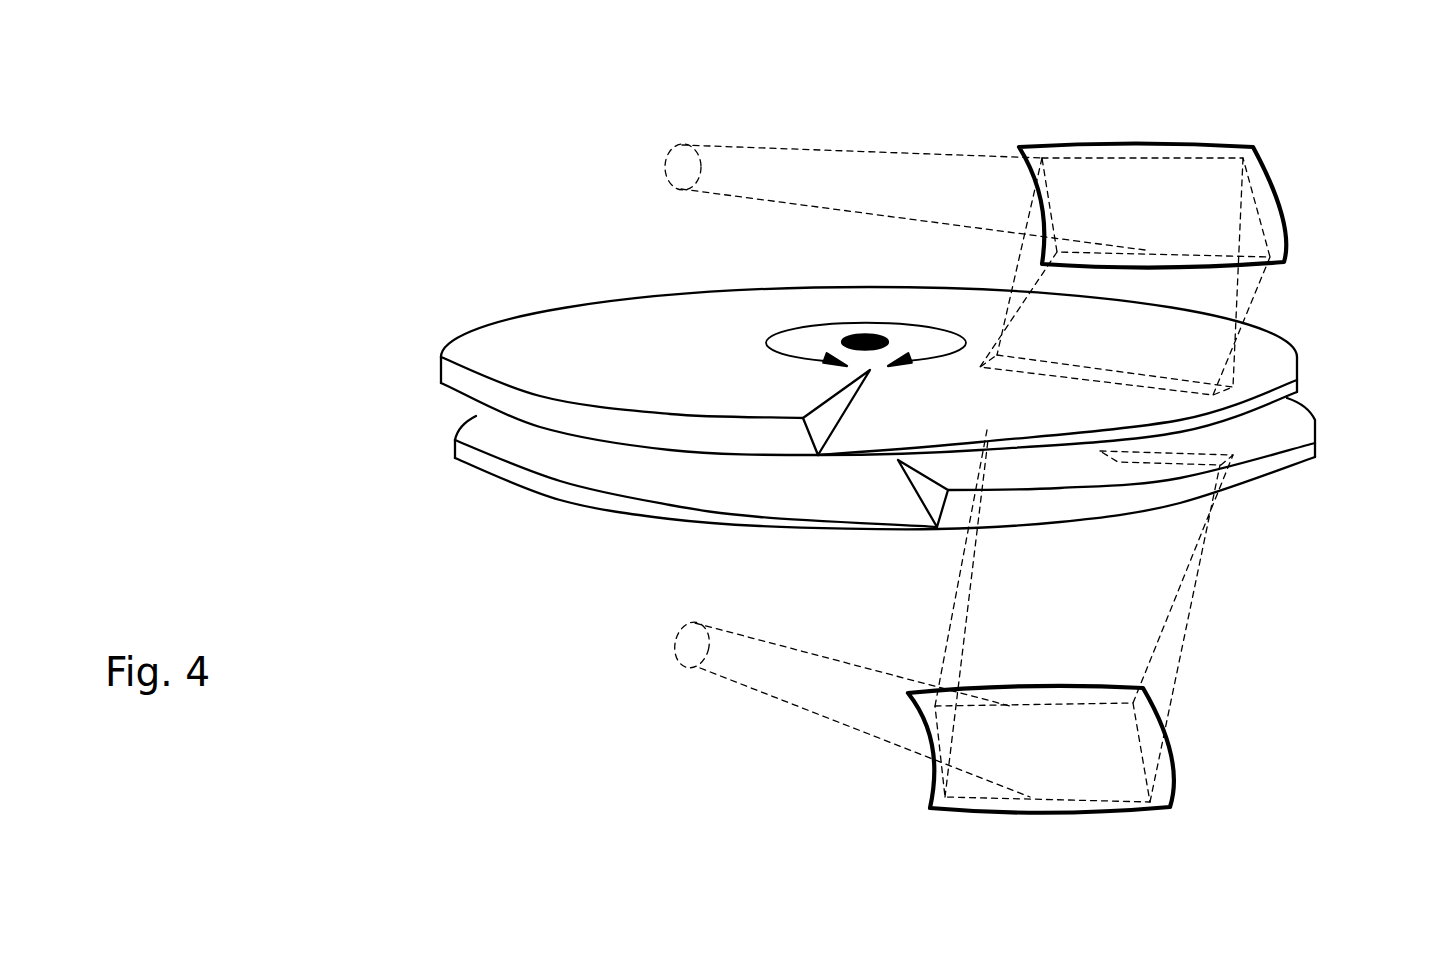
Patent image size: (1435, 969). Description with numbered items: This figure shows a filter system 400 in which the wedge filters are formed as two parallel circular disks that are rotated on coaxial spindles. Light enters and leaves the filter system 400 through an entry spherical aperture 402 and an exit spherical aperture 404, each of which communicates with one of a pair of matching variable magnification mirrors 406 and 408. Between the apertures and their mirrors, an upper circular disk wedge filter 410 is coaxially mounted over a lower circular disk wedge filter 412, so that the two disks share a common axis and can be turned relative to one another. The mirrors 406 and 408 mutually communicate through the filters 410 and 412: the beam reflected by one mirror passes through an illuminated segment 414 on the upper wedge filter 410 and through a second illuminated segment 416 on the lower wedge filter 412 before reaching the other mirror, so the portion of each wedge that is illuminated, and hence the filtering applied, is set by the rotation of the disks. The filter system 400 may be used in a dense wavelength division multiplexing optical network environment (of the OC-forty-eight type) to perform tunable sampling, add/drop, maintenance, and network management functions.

The filter system 400 is at (665, 55).
The entry spherical aperture 402 is at (674, 184).
The exit spherical aperture 404 is at (688, 663).
The variable magnification mirror 406 is at (1274, 188).
The variable magnification mirror 408 is at (1177, 783).
The upper circular disk wedge filter 410 is at (1297, 357).
The lower circular disk wedge filter 412 is at (1316, 443).
The illuminated segment 414 is at (1077, 376).
The illuminated segment 416 is at (1177, 456).